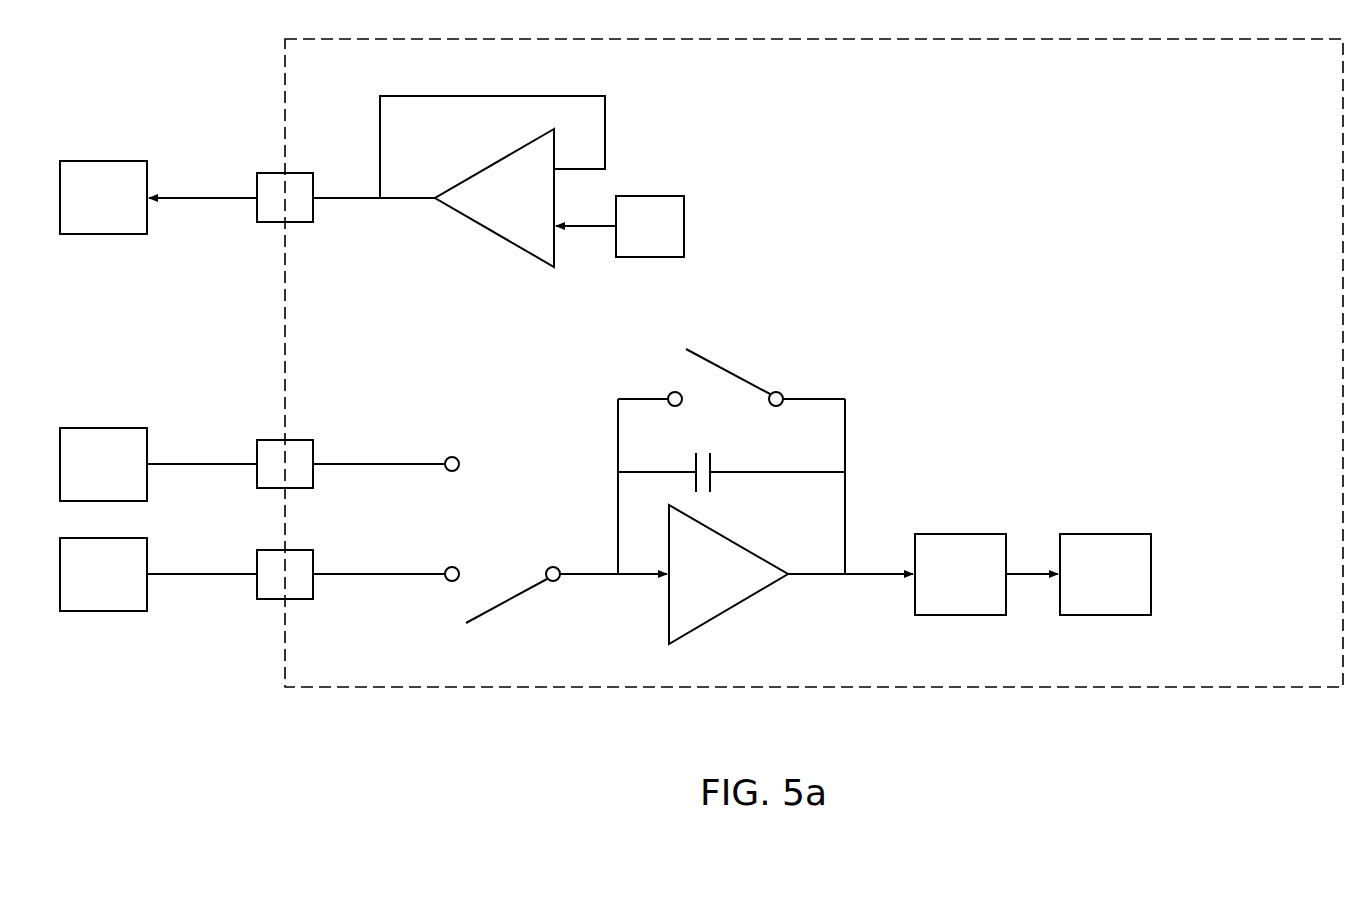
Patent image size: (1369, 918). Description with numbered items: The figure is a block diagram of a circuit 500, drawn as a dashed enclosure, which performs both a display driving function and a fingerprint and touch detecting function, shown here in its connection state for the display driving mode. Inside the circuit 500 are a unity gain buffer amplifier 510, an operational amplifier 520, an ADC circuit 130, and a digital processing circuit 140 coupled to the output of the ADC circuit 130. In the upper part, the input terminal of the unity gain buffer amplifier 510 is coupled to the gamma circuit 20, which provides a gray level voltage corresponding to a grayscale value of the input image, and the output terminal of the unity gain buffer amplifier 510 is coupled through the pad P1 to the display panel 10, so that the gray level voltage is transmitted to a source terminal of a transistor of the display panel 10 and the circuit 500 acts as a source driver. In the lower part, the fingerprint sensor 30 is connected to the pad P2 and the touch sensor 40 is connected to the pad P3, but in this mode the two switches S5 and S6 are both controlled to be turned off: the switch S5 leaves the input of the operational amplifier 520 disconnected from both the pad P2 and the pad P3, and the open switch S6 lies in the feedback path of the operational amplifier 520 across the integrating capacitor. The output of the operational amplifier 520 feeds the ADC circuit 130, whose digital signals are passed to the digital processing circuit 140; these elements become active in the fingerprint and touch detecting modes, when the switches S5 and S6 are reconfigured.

The display panel 10 is at (88, 213).
The pad P1 is at (270, 213).
The unity gain buffer amplifier 510 is at (491, 212).
The gamma circuit 20 is at (635, 241).
The touch sensor 40 is at (88, 479).
The pad P3 is at (270, 479).
The fingerprint sensor 30 is at (88, 589).
The pad P2 is at (270, 589).
The switch S5 is at (566, 602).
The switch S6 is at (731, 369).
The operational amplifier 520 is at (684, 590).
The ADC circuit 130 is at (936, 590).
The digital processing circuit 140 is at (1081, 590).
The circuit 500 is at (1267, 665).